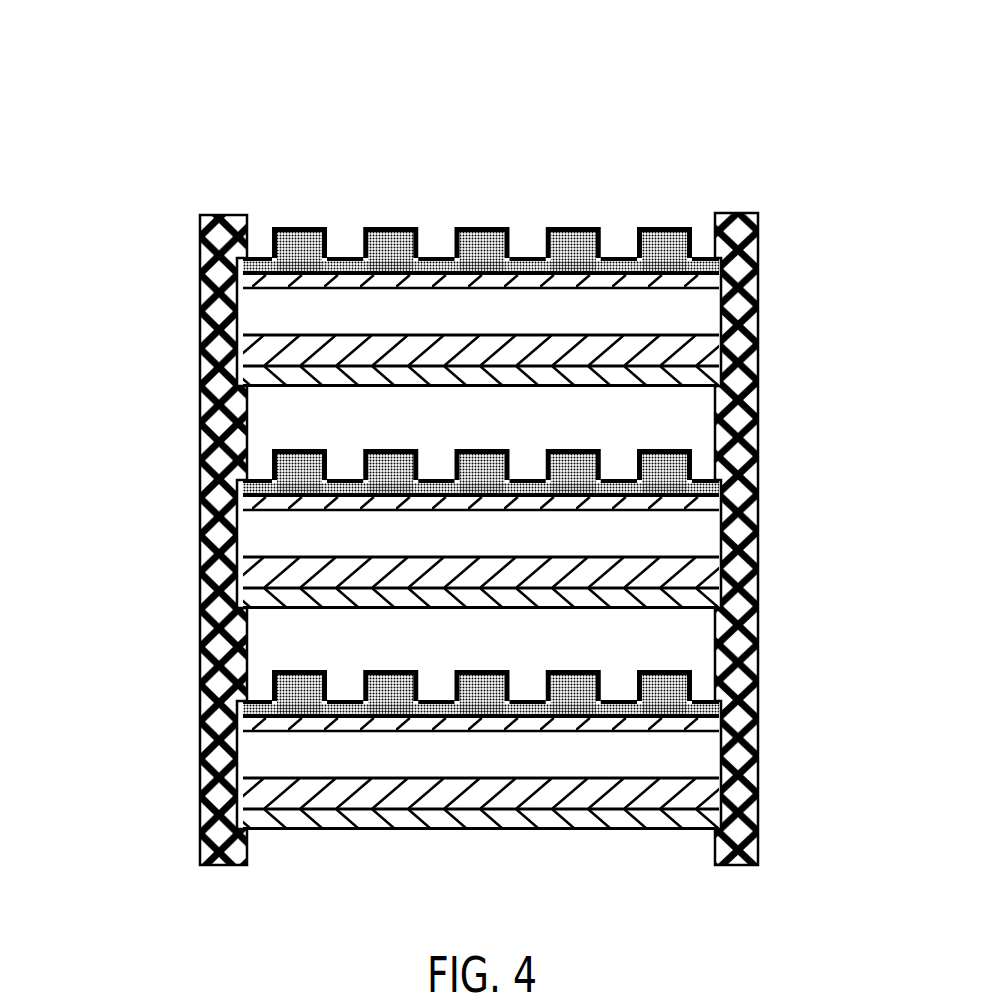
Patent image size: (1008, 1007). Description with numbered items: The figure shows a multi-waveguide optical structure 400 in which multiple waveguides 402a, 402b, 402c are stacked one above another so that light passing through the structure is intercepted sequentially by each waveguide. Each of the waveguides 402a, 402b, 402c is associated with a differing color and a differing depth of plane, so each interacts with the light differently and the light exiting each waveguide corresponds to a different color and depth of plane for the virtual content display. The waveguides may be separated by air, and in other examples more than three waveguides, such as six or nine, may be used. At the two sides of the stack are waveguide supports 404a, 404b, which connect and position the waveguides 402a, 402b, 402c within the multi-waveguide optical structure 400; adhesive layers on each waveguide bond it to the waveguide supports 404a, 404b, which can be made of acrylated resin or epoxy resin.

The multi-waveguide optical structure 400 is at (120, 110).
The waveguide 402a is at (793, 227).
The waveguide 402b is at (793, 441).
The waveguide 402c is at (795, 663).
The waveguide support 404a is at (200, 213).
The waveguide support 404b is at (740, 208).